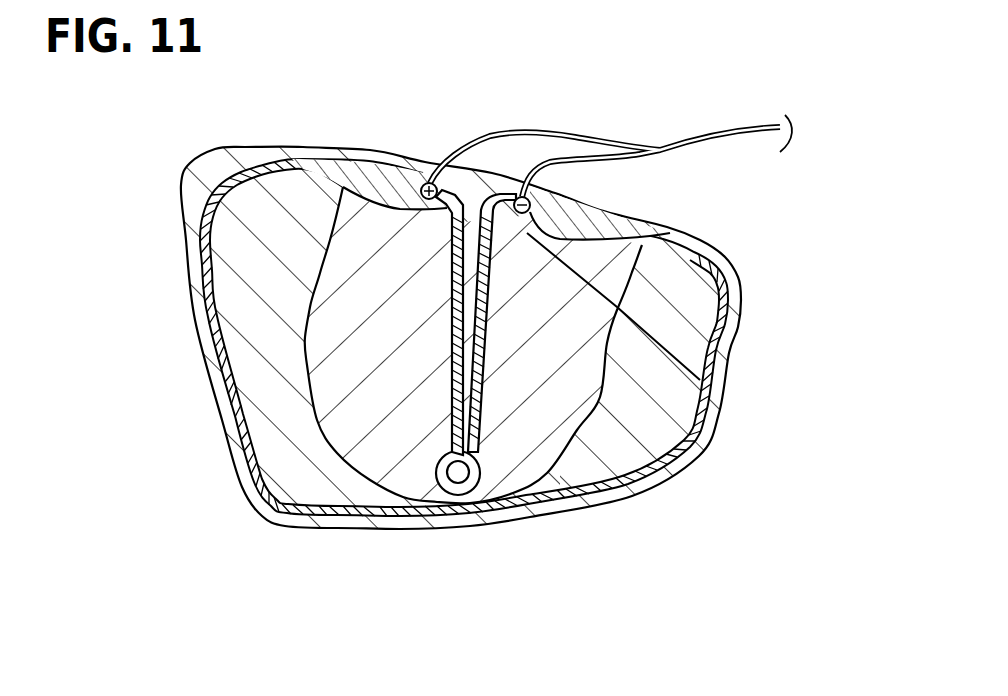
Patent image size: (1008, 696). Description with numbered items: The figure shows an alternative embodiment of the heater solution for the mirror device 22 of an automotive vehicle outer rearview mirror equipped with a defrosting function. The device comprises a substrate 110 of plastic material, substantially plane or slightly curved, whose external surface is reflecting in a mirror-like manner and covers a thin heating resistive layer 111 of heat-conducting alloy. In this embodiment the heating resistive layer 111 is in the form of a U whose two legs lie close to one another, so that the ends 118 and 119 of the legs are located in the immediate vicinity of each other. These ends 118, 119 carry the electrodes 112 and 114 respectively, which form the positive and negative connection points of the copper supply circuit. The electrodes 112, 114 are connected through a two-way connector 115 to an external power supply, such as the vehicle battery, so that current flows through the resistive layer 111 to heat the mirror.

The mirror device 22 is at (143, 204).
The substrate 110 is at (278, 510).
The heating resistive layer 111 is at (243, 370).
The electrode 112 is at (428, 181).
The electrode 114 is at (697, 385).
The two-way connector 115 is at (740, 133).
The end of leg 118 is at (424, 172).
The end of leg 119 is at (588, 207).